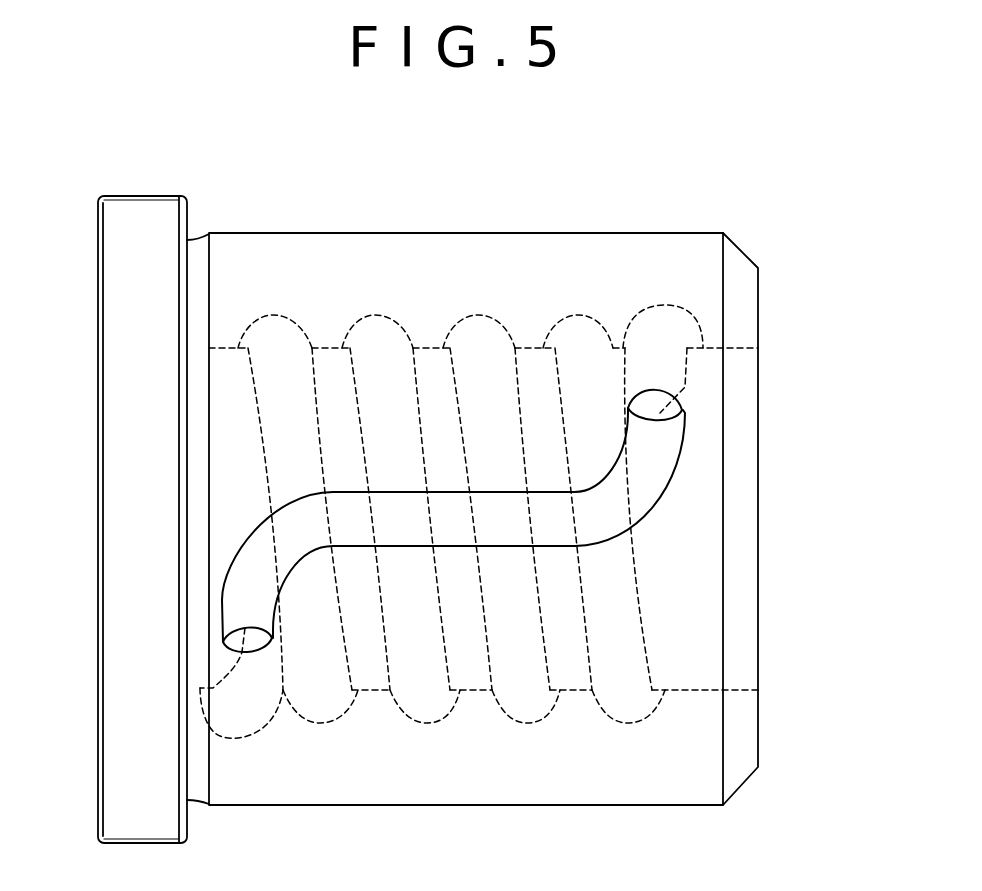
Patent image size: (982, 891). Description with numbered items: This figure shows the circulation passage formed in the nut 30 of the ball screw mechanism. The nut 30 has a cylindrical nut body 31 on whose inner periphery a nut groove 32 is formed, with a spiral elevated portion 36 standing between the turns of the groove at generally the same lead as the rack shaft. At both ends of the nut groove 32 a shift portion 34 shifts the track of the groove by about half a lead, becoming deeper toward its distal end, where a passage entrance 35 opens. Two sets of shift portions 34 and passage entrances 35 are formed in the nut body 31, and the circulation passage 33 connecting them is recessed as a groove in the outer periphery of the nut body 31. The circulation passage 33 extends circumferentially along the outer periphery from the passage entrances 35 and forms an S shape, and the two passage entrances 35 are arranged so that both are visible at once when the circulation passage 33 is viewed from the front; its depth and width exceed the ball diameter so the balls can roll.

The nut 30 is at (476, 519).
The nut body 31 is at (700, 242).
The nut groove 32 is at (483, 650).
The circulation passage 33 is at (684, 492).
The shift portion 34 is at (705, 307).
The passage entrance 35 is at (240, 655).
The elevated portion 36 is at (472, 677).